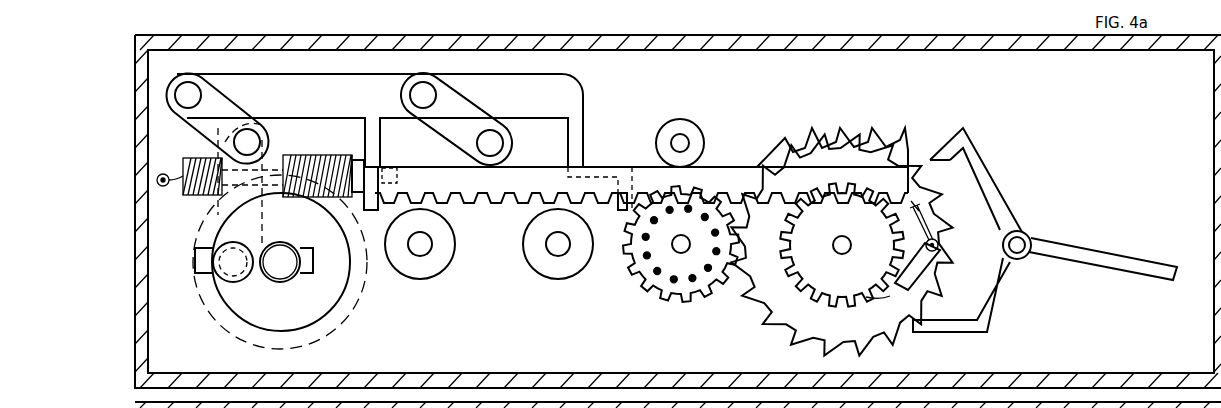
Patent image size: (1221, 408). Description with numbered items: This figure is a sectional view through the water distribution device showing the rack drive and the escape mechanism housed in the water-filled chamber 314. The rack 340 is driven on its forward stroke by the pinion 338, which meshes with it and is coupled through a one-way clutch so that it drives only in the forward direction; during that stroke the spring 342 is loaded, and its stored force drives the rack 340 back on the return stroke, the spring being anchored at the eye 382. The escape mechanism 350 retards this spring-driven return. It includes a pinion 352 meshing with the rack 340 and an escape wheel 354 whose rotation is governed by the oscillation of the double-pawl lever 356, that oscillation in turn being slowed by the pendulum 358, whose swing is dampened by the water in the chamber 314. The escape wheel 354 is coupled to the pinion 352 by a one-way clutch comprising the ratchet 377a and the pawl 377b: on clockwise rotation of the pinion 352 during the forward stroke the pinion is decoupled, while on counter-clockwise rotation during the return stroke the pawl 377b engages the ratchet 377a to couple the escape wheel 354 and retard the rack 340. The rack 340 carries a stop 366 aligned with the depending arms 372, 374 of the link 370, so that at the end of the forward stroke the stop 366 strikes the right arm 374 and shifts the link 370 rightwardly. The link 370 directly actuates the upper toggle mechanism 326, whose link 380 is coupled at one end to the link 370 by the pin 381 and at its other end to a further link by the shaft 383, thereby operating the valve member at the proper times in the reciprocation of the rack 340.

The chamber 314 is at (1101, 135).
The upper toggle mechanism 326 is at (369, 90).
The link 370 is at (507, 88).
The link 380 is at (227, 93).
The pin 381 is at (191, 77).
The shaft 383 is at (225, 146).
The spring 342 is at (323, 165).
The anchor eye 382 is at (218, 197).
The stop 366 is at (398, 178).
The rack 340 is at (502, 192).
The right arm 374 is at (621, 200).
The depending arm 372 is at (377, 213).
The pinion 338 is at (665, 294).
The pinion 352 is at (822, 265).
The escape mechanism 350 is at (885, 114).
The escape wheel 354 is at (812, 140).
The double-pawl lever 356 is at (1008, 202).
The pendulum 358 is at (1078, 266).
The pawl 377b is at (945, 298).
The ratchet 377a is at (866, 297).